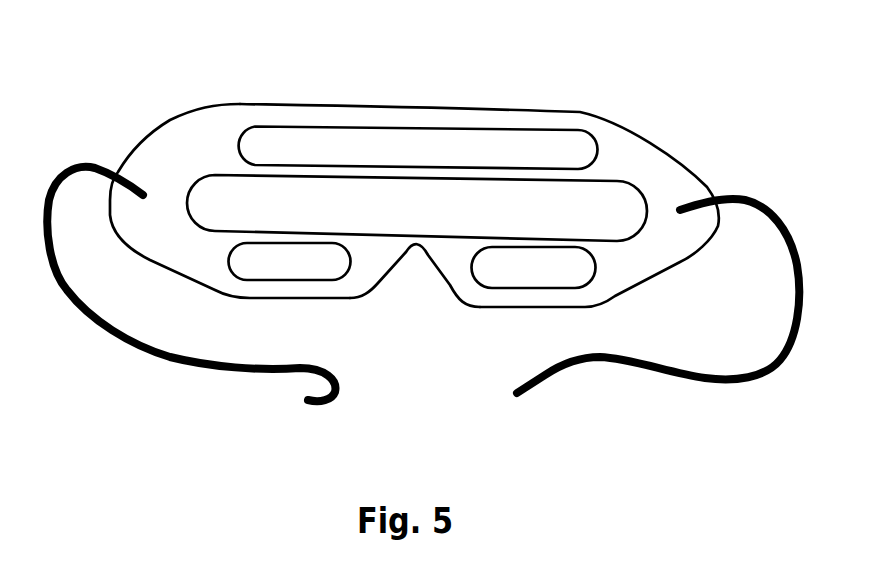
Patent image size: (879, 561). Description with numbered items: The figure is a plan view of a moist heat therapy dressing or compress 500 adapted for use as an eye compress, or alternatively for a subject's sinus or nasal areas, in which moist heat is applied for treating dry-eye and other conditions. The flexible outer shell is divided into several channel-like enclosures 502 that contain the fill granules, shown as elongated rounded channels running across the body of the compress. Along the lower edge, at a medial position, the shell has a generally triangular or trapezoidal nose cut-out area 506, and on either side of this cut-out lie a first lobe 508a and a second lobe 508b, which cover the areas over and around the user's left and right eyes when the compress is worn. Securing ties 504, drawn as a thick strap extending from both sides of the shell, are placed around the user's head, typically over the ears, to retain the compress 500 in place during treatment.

The dressing or compress 500 is at (440, 72).
The enclosures 502 is at (369, 145).
The securing ties 504 is at (527, 393).
The nose cut-out area 506 is at (412, 283).
The first lobe 508a is at (259, 292).
The second lobe 508b is at (618, 269).